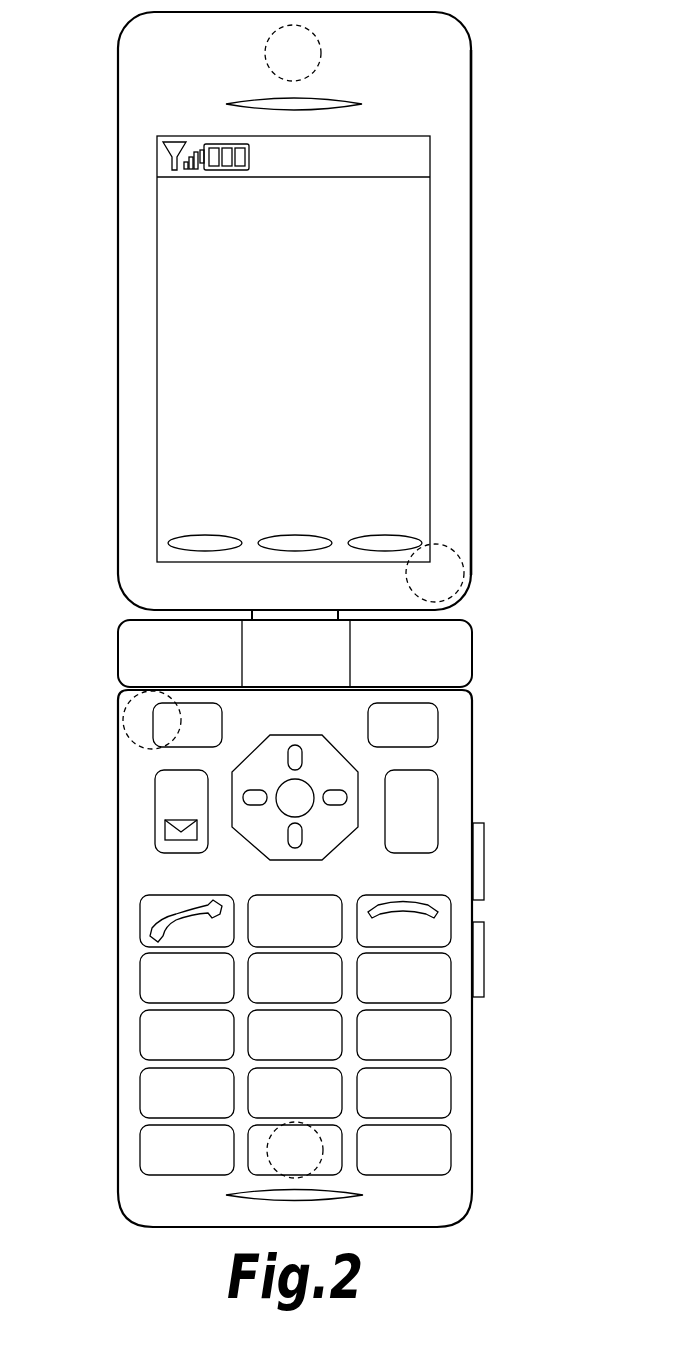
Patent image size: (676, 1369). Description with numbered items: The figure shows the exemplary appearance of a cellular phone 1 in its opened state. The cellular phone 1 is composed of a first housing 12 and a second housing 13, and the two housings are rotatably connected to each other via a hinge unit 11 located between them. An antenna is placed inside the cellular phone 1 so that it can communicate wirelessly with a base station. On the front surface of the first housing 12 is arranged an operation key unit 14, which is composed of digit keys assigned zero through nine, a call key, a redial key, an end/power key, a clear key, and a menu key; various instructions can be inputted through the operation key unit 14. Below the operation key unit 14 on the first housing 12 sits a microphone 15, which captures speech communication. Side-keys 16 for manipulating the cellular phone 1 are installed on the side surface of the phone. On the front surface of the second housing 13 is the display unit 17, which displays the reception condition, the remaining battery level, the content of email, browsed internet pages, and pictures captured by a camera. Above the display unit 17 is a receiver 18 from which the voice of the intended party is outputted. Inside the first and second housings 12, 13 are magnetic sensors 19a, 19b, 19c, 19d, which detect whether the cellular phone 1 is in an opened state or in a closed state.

The cellular phone 1 is at (533, 967).
The hinge unit 11 is at (475, 643).
The first housing 12 is at (475, 757).
The second housing 13 is at (473, 260).
The operation key unit 14 is at (100, 706).
The microphone 15 is at (226, 1194).
The side-keys 16 is at (485, 865).
The display unit 17 is at (425, 201).
The receiver 18 is at (245, 101).
The magnetic sensor 19a is at (322, 52).
The magnetic sensor 19b is at (315, 1172).
The magnetic sensor 19c is at (464, 575).
The magnetic sensor 19d is at (120, 696).